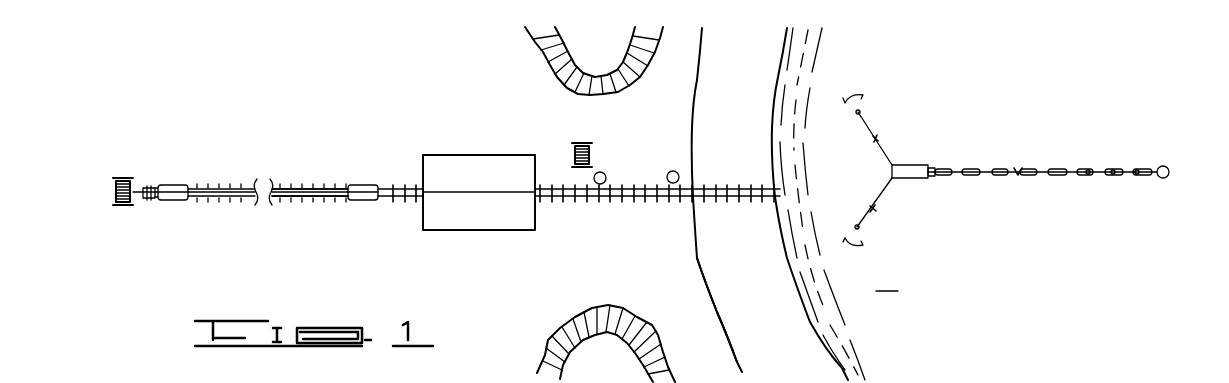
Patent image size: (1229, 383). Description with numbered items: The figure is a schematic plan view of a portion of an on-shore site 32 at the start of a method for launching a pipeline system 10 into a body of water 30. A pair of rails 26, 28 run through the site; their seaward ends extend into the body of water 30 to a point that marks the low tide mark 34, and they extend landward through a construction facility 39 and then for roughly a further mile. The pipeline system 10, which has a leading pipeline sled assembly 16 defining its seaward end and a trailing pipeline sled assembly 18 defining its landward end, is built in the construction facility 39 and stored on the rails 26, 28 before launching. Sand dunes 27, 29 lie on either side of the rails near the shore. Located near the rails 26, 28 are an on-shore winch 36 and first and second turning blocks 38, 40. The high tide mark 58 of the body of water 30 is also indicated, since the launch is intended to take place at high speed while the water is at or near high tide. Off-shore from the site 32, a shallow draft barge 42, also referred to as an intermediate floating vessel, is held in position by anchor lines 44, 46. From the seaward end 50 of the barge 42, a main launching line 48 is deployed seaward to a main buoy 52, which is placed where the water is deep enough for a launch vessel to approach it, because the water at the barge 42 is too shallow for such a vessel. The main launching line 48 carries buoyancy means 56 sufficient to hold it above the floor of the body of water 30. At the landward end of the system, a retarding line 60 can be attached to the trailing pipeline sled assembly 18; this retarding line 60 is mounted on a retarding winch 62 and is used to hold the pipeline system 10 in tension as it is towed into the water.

The pipeline system 10 is at (285, 192).
The leading pipeline sled assembly 16 is at (363, 185).
The trailing pipeline sled assembly 18 is at (175, 185).
The rail 26 is at (307, 200).
The sand dune 27 is at (627, 72).
The rail 28 is at (322, 187).
The sand dune 29 is at (637, 325).
The body of water 30 is at (887, 281).
The on-shore site 32 is at (685, 103).
The low tide mark 34 is at (778, 80).
The on-shore winch 36 is at (588, 143).
The first turning block 38 is at (675, 171).
The construction facility 39 is at (483, 215).
The second turning block 40 is at (604, 172).
The shallow draft barge 42 is at (913, 165).
The anchor line 44 is at (877, 135).
The anchor line 46 is at (877, 208).
The main launching line 48 is at (1018, 168).
The seaward end of barge 50 is at (929, 178).
The main buoy 52 is at (1167, 166).
The buoyancy means 56 is at (1137, 170).
The high tide mark 58 is at (737, 352).
The retarding line 60 is at (147, 200).
The retarding winch 62 is at (125, 178).